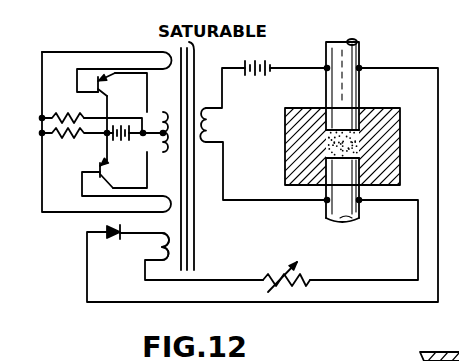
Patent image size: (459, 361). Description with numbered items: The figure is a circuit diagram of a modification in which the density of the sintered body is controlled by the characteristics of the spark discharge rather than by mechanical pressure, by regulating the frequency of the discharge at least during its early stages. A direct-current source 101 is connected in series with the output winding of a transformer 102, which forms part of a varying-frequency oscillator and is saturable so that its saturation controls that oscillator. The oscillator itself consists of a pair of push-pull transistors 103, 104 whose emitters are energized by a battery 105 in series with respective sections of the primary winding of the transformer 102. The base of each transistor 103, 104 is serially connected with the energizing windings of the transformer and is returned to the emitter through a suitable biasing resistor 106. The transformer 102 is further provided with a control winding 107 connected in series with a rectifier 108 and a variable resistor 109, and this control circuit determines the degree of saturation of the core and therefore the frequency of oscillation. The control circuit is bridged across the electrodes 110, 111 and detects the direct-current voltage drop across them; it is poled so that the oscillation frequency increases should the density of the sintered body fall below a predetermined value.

The direct-current source 101 is at (262, 60).
The transformer 102 is at (195, 250).
The push-pull transistor 103 is at (98, 78).
The push-pull transistor 104 is at (100, 176).
The battery 105 is at (125, 144).
The biasing resistor 106 is at (74, 137).
The control winding 107 is at (162, 244).
The rectifier 108 is at (106, 236).
The variable resistor 109 is at (303, 269).
The electrode 110 is at (360, 52).
The electrode 111 is at (357, 217).